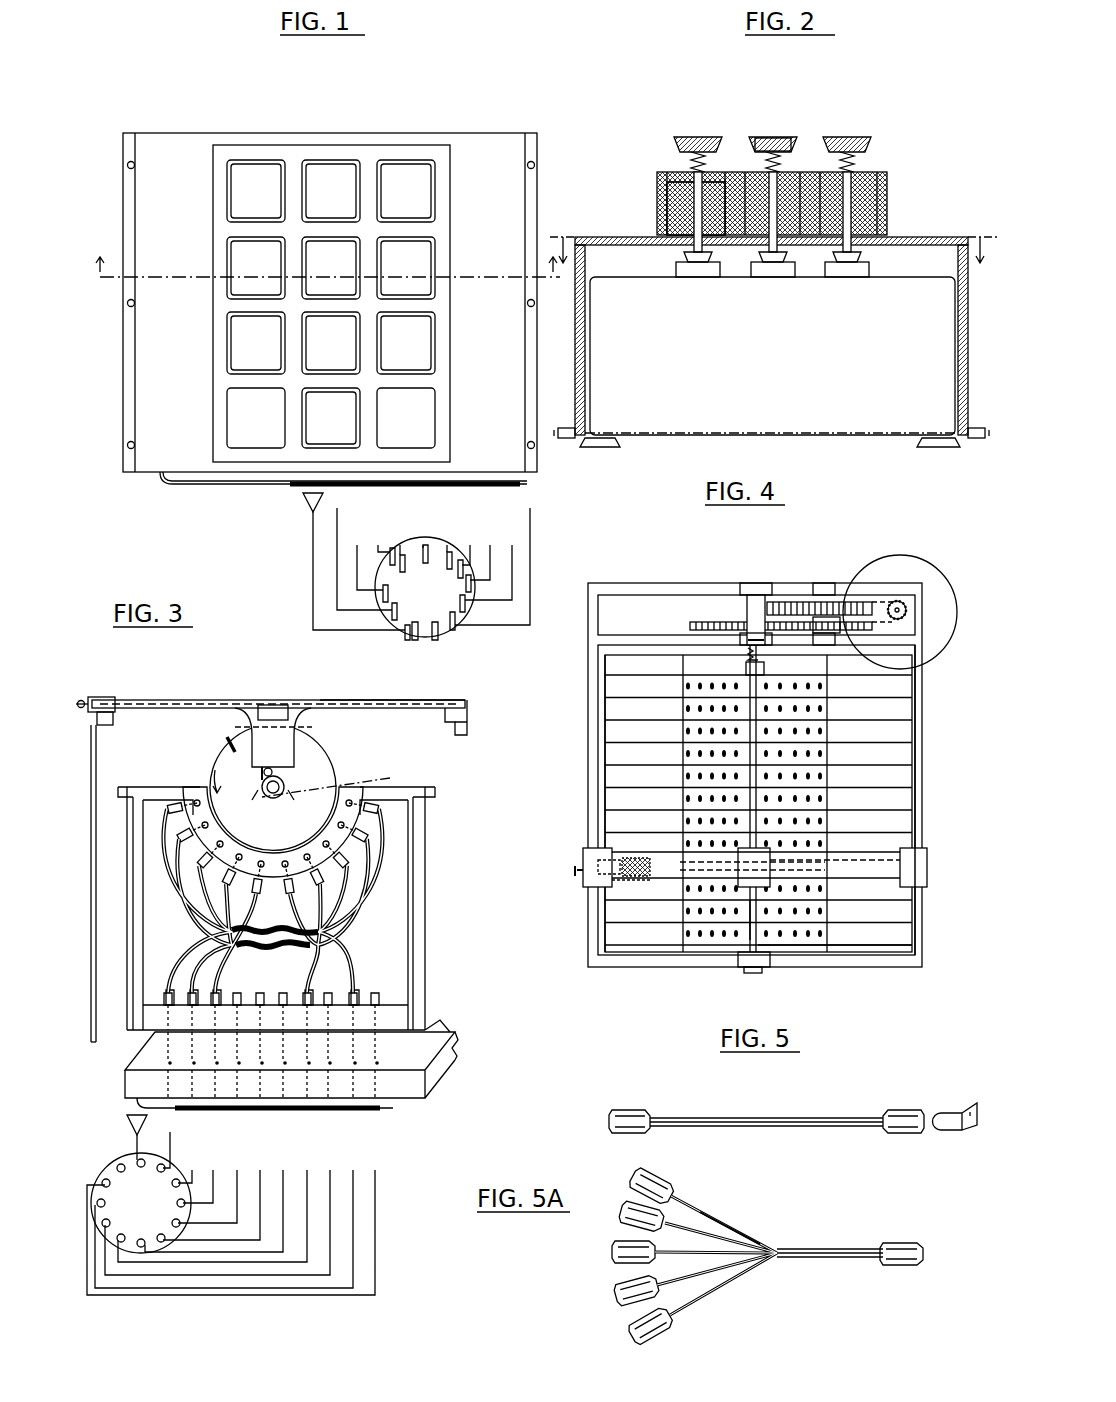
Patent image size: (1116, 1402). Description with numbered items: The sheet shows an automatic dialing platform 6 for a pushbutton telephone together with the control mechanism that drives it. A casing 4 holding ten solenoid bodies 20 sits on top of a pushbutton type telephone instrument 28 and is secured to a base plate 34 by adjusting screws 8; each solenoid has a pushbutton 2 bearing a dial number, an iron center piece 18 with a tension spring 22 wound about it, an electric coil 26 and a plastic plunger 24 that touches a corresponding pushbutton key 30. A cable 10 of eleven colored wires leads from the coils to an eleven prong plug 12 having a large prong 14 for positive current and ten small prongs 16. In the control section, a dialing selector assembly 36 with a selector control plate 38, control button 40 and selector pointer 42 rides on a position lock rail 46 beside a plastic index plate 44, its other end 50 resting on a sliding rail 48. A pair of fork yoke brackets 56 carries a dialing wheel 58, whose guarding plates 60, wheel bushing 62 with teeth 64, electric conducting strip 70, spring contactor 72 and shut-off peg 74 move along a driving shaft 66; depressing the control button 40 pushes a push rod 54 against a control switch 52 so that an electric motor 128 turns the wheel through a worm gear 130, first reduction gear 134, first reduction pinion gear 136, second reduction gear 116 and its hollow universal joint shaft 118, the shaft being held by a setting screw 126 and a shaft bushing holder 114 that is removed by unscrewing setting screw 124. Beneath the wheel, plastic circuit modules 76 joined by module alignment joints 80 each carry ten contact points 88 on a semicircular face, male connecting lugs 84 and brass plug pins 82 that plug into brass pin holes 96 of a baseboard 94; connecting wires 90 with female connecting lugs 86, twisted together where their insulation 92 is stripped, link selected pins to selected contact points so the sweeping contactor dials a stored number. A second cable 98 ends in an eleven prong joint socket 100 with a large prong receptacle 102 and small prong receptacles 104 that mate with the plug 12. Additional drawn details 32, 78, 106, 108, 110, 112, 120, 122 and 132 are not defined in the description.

In FIG. 1, the pushbutton 2 is at (252, 170).
In FIG. 2, the pushbutton 2 is at (773, 137).
In FIG. 1, the casing 4 is at (365, 155).
In FIG. 2, the casing 4 is at (878, 170).
In FIG. 1, the automatic dialing platform 6 is at (478, 150).
In FIG. 2, the automatic dialing platform 6 is at (945, 236).
In FIG. 1, the adjusting screws 8 is at (131, 140).
In FIG. 2, the adjusting screws 8 is at (568, 440).
In FIG. 1, the cable 10 is at (235, 485).
In FIG. 1, the eleven prong plug 12 is at (445, 612).
In FIG. 1, the large prong 14 is at (410, 638).
In FIG. 1, the small prongs 16 is at (396, 598).
In FIG. 2, the center piece 18 is at (745, 145).
In FIG. 2, the solenoid bodies 20 is at (808, 165).
In FIG. 2, the tension spring 22 is at (692, 165).
In FIG. 2, the plastic plunger 24 is at (708, 262).
In FIG. 2, the electric coil 26 is at (800, 248).
In FIG. 2, the pushbutton type telephone instrument 28 is at (910, 290).
In FIG. 2, the pushbutton key 30 is at (690, 270).
In FIG. 2, the foot 32 is at (938, 440).
In FIG. 2, the base plate 34 is at (626, 430).
In FIG. 4, the dialing selector assembly 36 is at (680, 857).
In FIG. 3, the dialing selector assembly 36 is at (395, 705).
In FIG. 4, the selector control plate 38 is at (590, 858).
In FIG. 3, the selector control plate 38 is at (105, 700).
In FIG. 4, the control button 40 is at (578, 878).
In FIG. 3, the control button 40 is at (83, 697).
In FIG. 3, the selector pointer 42 is at (89, 738).
In FIG. 3, the plastic index plate 44 is at (98, 905).
In FIG. 4, the position lock rail 46 is at (592, 660).
In FIG. 3, the position lock rail 46 is at (113, 722).
In FIG. 4, the sliding rail 48 is at (920, 905).
In FIG. 3, the sliding rail 48 is at (445, 725).
In FIG. 4, the other end of selector assembly 50 is at (920, 860).
In FIG. 3, the other end of selector assembly 50 is at (468, 722).
In FIG. 4, the control switch 52 is at (748, 890).
In FIG. 3, the control switch 52 is at (275, 707).
In FIG. 4, the push rod 54 is at (685, 876).
In FIG. 3, the push rod 54 is at (185, 703).
In FIG. 3, the fork yoke brackets 56 is at (300, 742).
In FIG. 4, the dialing wheel 58 is at (790, 862).
In FIG. 3, the dialing wheel 58 is at (312, 767).
In FIG. 3, the guarding plates 60 is at (375, 780).
In FIG. 3, the wheel bushing 62 is at (280, 796).
In FIG. 3, the teeth 64 is at (268, 768).
In FIG. 4, the driving shaft 66 is at (755, 940).
In FIG. 3, the driving shaft 66 is at (262, 760).
In FIG. 3, the electric conducting strip 70 is at (243, 818).
In FIG. 3, the spring contactor 72 is at (213, 790).
In FIG. 3, the shut-off peg 74 is at (224, 740).
In FIG. 4, the plastic circuit modules 76 is at (905, 710).
In FIG. 3, the plastic circuit modules 76 is at (420, 913).
In FIG. 3, the flange 78 is at (432, 790).
In FIG. 4, the module alignment joints 80 is at (905, 742).
In FIG. 3, the module alignment joints 80 is at (412, 942).
In FIG. 3, the brass plug pins 82 is at (430, 1060).
In FIG. 3, the male connecting lugs 84 is at (378, 998).
In FIG. 5, the male connecting lugs 84 is at (950, 1130).
In FIG. 3, the female connecting lugs 86 is at (362, 845).
In FIG. 5, the female connecting lugs 86 is at (622, 1110).
In FIG. 5A, the female connecting lugs 86 is at (905, 1243).
In FIG. 4, the contact points 88 is at (783, 935).
In FIG. 3, the contact points 88 is at (385, 812).
In FIG. 3, the connecting wires 90 is at (372, 878).
In FIG. 5, the connecting wires 90 is at (795, 1121).
In FIG. 5A, the connecting wires 90 is at (830, 1256).
In FIG. 5, the insulation 92 is at (745, 1118).
In FIG. 5A, the insulation 92 is at (718, 1214).
In FIG. 3, the baseboard 94 is at (450, 1035).
In FIG. 3, the brass pin holes 96 is at (430, 1050).
In FIG. 3, the cable 98 is at (395, 1108).
In FIG. 3, the eleven prong joint socket 100 is at (122, 1175).
In FIG. 3, the large prong receptacle 102 is at (133, 1172).
In FIG. 3, the small prong receptacle 104 is at (104, 1206).
In FIG. 4, the pawl 106 is at (600, 868).
In FIG. 4, the spring 108 is at (630, 866).
In FIG. 4, the inner frame 110 is at (598, 690).
In FIG. 4, the lever 112 is at (625, 880).
In FIG. 4, the shaft bushing holder 114 is at (762, 968).
In FIG. 4, the second reduction gear 116 is at (715, 622).
In FIG. 4, the hollow universal joint shaft 118 is at (745, 652).
In FIG. 4, the slider pin 120 is at (748, 640).
In FIG. 4, the slide 122 is at (760, 600).
In FIG. 4, the setting screw 124 is at (755, 590).
In FIG. 4, the setting screw 126 is at (765, 668).
In FIG. 4, the electric motor 128 is at (880, 565).
In FIG. 4, the worm gear 130 is at (905, 608).
In FIG. 4, the guide 132 is at (825, 585).
In FIG. 4, the first reduction gear 134 is at (793, 602).
In FIG. 4, the first reduction pinion gear 136 is at (840, 625).